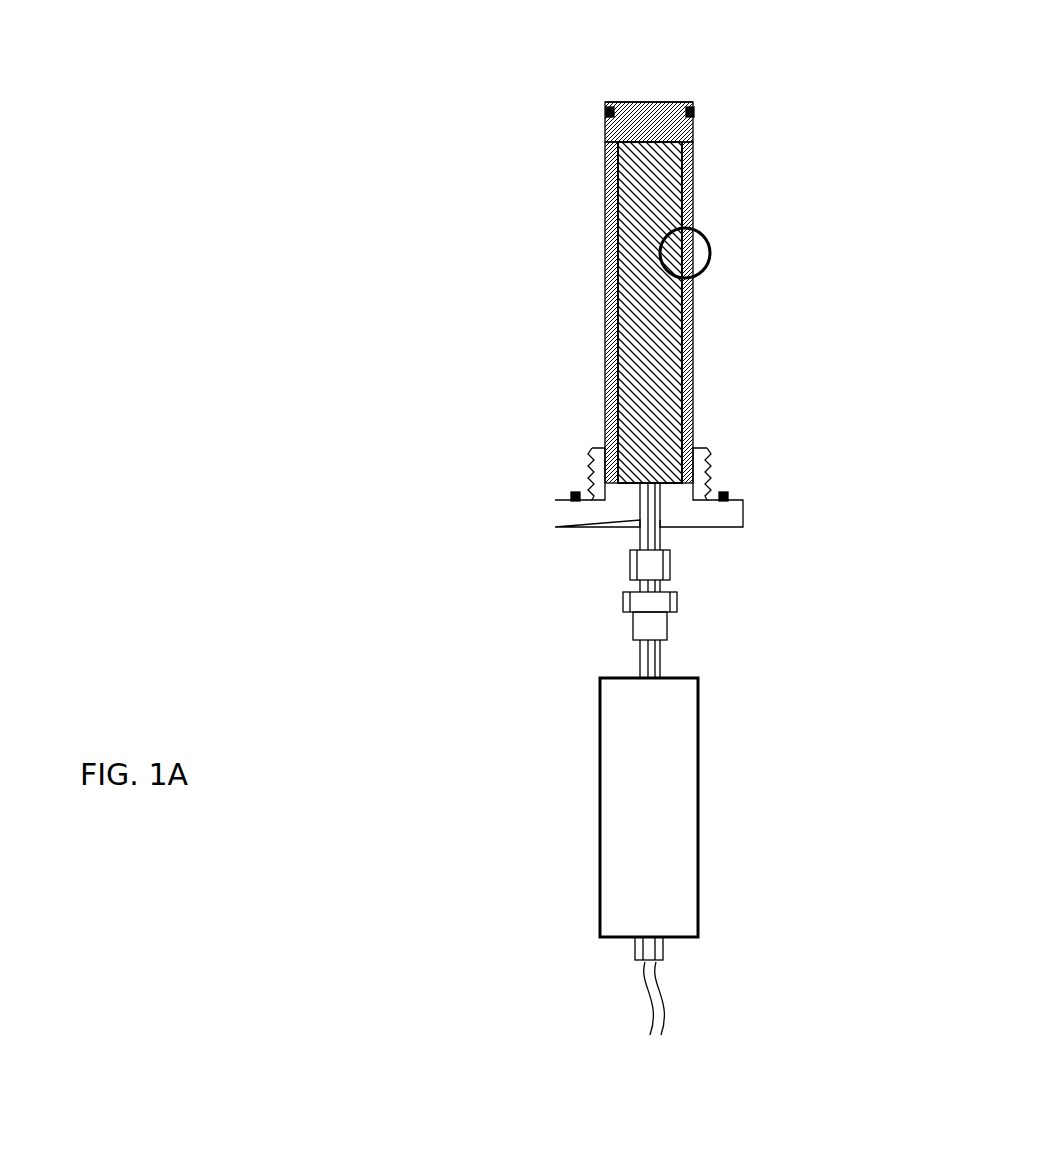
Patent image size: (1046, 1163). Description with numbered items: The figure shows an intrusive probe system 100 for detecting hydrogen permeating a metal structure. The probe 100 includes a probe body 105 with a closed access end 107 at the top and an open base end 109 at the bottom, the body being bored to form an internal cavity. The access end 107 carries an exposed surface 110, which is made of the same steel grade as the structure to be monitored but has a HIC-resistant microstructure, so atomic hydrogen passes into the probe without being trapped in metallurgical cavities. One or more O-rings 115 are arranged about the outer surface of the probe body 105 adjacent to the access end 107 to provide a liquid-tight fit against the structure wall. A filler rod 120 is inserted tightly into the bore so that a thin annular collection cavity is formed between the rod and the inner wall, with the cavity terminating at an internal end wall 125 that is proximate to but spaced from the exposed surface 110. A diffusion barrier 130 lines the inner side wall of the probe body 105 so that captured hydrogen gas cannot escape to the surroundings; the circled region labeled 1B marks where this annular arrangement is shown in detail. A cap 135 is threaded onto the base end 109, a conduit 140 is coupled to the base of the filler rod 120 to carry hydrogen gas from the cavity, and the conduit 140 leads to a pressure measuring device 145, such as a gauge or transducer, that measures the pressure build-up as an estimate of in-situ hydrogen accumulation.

The intrusive probe system 100 is at (212, 227).
The probe body 105 is at (400, 90).
The access end 107 is at (625, 98).
The exposed surface 110 is at (665, 98).
The O-rings 115 is at (697, 113).
The internal end wall 125 is at (640, 143).
The detail view circle 1B is at (710, 260).
The diffusion barrier 130 is at (685, 353).
The filler rod 120 is at (663, 412).
The base end 109 is at (663, 477).
The cap 135 is at (597, 513).
The conduit 140 is at (655, 655).
The pressure measuring device 145 is at (698, 805).